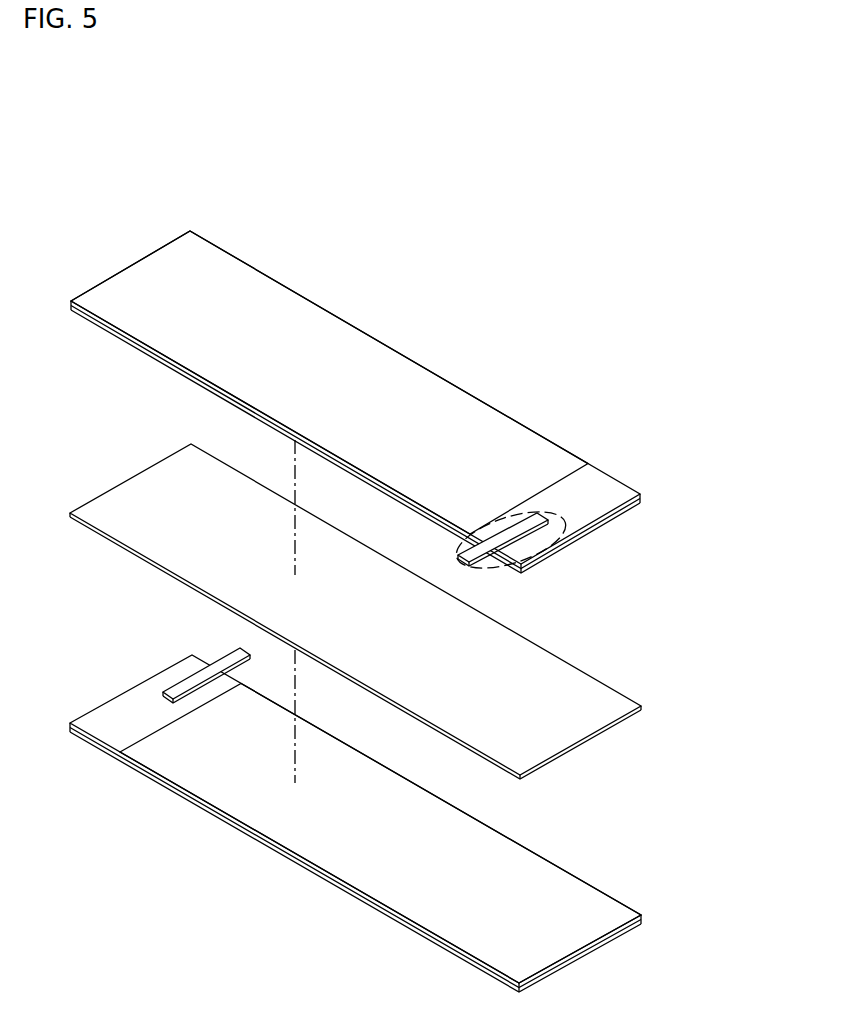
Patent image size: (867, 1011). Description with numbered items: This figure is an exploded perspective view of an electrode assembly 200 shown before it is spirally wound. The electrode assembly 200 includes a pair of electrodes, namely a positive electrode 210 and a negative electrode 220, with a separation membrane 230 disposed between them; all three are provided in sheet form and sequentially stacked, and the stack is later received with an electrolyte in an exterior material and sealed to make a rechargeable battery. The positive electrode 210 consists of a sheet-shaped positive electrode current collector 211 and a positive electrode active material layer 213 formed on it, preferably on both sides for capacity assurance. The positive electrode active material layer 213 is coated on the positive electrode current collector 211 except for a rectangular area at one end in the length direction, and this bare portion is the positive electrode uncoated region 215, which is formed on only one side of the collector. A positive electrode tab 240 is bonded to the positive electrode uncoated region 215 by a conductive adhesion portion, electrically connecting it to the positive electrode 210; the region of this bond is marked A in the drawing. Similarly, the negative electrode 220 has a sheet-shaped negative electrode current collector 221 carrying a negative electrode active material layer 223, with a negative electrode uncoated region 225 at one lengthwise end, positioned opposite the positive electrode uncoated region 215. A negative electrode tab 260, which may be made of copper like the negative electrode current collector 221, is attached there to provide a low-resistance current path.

The electrode assembly 200 is at (678, 483).
The positive electrode 210 is at (503, 332).
The positive electrode current collector 211 is at (600, 460).
The positive electrode active material layer 213 is at (514, 437).
The positive electrode uncoated region 215 is at (650, 438).
The negative electrode 220 is at (177, 888).
The negative electrode current collector 221 is at (98, 733).
The negative electrode active material layer 223 is at (170, 760).
The negative electrode uncoated region 225 is at (80, 692).
The separation membrane 230 is at (617, 700).
The positive electrode tab 240 is at (493, 563).
The negative electrode tab 260 is at (222, 663).
The tab attachment region A is at (562, 533).